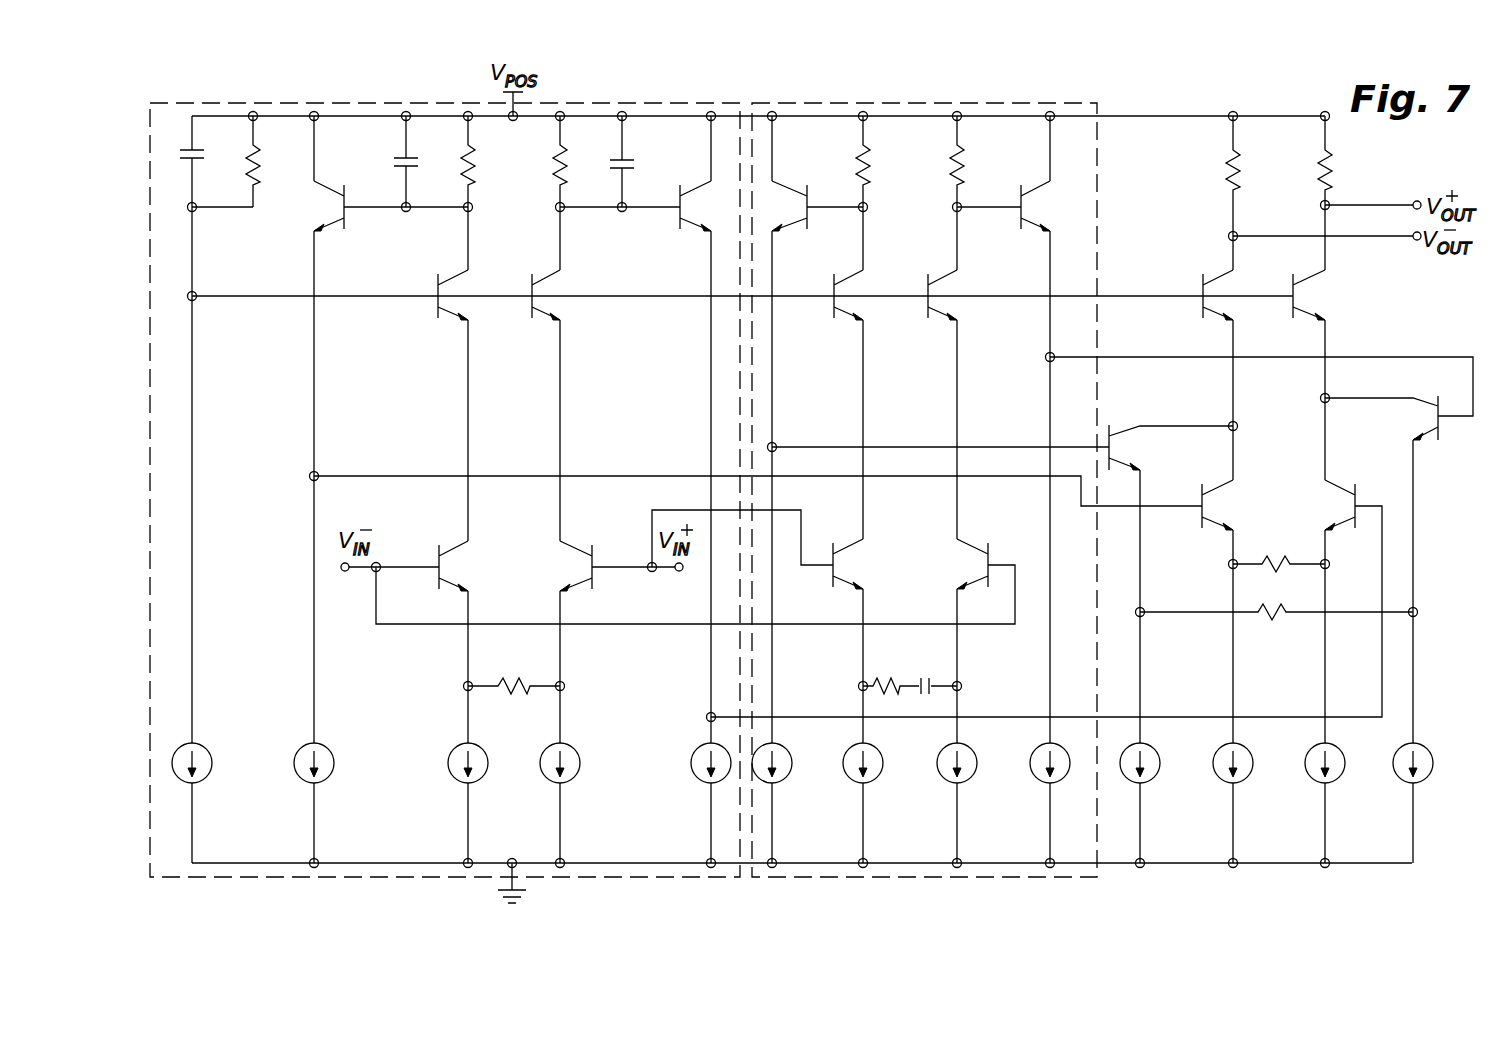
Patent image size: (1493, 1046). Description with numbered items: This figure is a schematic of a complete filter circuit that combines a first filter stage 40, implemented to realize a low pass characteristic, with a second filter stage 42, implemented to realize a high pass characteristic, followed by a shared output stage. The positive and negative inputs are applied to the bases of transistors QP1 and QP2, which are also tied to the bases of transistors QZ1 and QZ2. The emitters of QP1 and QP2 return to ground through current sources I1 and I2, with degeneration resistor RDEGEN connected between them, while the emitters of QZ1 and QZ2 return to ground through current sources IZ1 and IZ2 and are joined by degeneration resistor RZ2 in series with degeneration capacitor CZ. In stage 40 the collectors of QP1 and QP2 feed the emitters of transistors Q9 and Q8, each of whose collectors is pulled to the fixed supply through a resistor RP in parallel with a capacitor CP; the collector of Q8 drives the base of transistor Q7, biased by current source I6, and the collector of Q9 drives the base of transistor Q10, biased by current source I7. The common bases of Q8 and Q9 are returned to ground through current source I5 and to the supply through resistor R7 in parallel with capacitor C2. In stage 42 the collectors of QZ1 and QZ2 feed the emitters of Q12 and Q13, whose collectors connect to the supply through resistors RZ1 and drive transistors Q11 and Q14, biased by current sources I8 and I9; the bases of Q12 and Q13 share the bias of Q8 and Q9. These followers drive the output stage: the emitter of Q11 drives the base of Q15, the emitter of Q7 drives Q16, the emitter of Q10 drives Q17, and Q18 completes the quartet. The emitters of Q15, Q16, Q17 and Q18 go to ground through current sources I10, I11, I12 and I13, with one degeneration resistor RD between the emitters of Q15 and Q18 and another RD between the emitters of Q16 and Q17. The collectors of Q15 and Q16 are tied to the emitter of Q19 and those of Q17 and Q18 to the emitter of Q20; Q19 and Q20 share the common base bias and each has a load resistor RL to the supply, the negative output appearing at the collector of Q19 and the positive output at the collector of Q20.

The first filter stage 40 is at (422, 878).
The second filter stage 42 is at (1003, 878).
The transistor Q7 is at (317, 489).
The transistor Q8 is at (469, 402).
The transistor Q9 is at (563, 402).
The transistor Q10 is at (703, 489).
The transistor Q11 is at (780, 489).
The transistor Q12 is at (869, 401).
The transistor Q13 is at (963, 401).
The transistor Q14 is at (1047, 489).
The transistor Q15 is at (1171, 644).
The transistor Q16 is at (1234, 671).
The transistor Q17 is at (1319, 671).
The transistor Q18 is at (1381, 629).
The transistor Q19 is at (1238, 372).
The transistor Q20 is at (1324, 375).
The transistor QP1 is at (556, 702).
The transistor QP2 is at (462, 702).
The transistor QZ1 is at (860, 701).
The transistor QZ2 is at (955, 701).
The capacitor C2 is at (181, 489).
The capacitor CP is at (511, 161).
The degeneration capacitor CZ is at (934, 673).
The resistor R7 is at (267, 161).
The resistor RP is at (514, 193).
The resistor RZ1 is at (931, 193).
The degeneration resistor RZ2 is at (891, 673).
The resistor RL is at (1295, 193).
The degeneration resistor RD is at (1276, 594).
The degeneration resistor RDEGEN is at (514, 671).
The current source I1 is at (477, 765).
The current source I2 is at (569, 765).
The current source I5 is at (202, 765).
The current source I6 is at (323, 765).
The current source I7 is at (693, 765).
The current source I8 is at (781, 765).
The current source I9 is at (1059, 765).
The current source I10 is at (1154, 765).
The current source I11 is at (1247, 765).
The current source I12 is at (1339, 765).
The current source I13 is at (1427, 765).
The current source IZ1 is at (878, 765).
The current source IZ2 is at (972, 765).